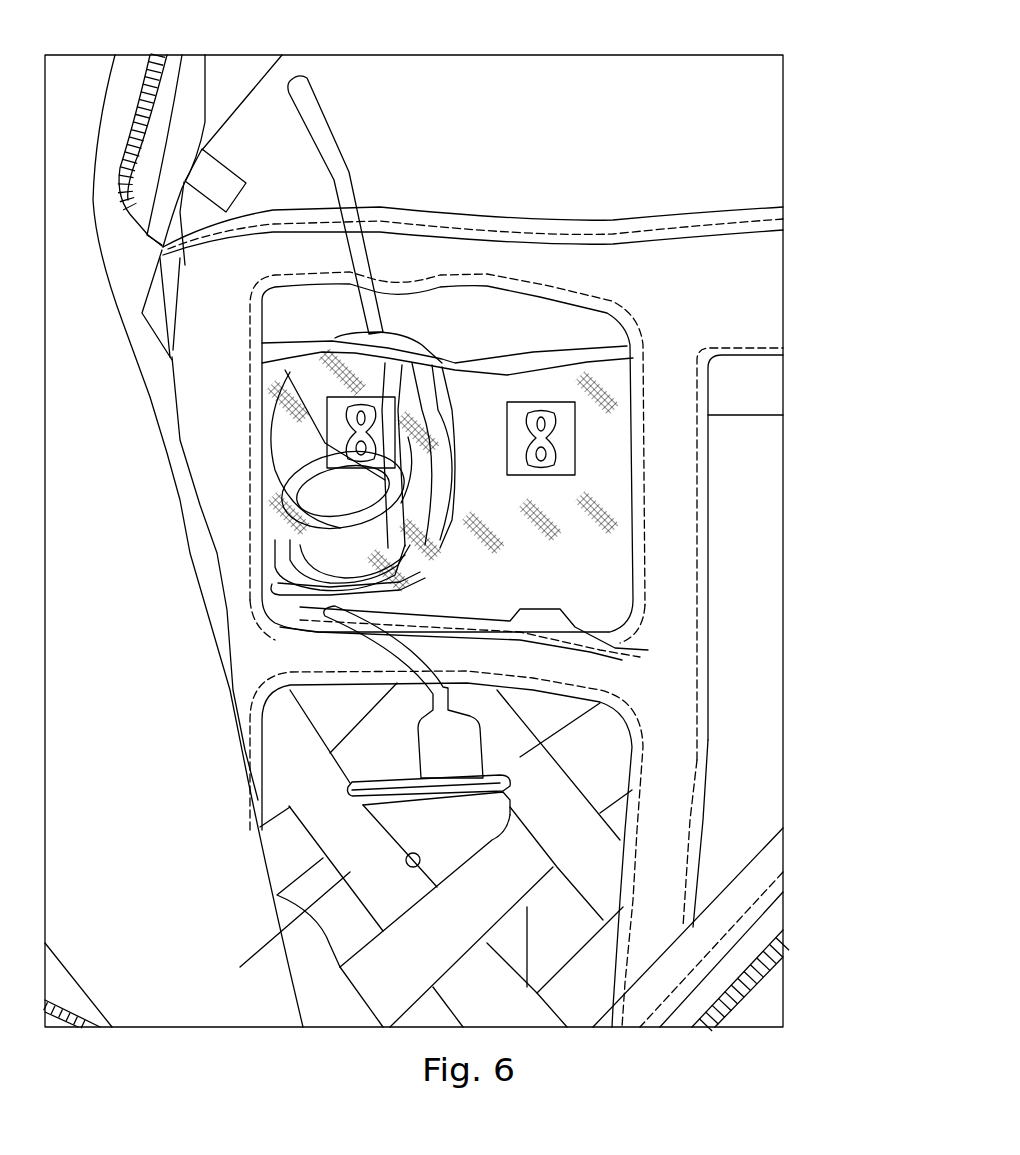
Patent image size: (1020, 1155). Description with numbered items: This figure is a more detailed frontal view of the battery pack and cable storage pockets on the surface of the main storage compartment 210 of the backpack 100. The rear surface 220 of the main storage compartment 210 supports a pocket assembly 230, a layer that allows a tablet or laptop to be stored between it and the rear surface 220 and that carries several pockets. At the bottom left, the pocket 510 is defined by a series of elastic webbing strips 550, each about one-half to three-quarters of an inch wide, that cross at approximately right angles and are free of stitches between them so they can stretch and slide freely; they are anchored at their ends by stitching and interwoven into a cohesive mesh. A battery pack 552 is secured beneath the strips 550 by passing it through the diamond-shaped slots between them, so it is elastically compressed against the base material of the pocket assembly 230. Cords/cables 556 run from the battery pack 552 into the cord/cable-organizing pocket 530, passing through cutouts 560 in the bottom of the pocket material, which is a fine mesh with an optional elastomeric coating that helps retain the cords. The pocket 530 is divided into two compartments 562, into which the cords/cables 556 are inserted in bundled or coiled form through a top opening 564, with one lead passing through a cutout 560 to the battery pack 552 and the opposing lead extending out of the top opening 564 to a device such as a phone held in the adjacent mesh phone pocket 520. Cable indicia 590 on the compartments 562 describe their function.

The backpack 100 is at (553, 47).
The main storage compartment 210 is at (540, 192).
The rear surface 220 is at (437, 136).
The pocket assembly 230 is at (615, 245).
The bottom left pocket 510 is at (283, 860).
The phone pocket 520 is at (735, 340).
The cord/cable-organizing pocket 530 is at (250, 427).
The elastic webbing strips 550 is at (293, 830).
The battery pack 552 is at (464, 840).
The cords/cables 556 is at (322, 626).
The cutouts 560 is at (313, 622).
The compartments 562 is at (307, 332).
The top opening 564 is at (442, 362).
The cable indicia 590 is at (387, 410).